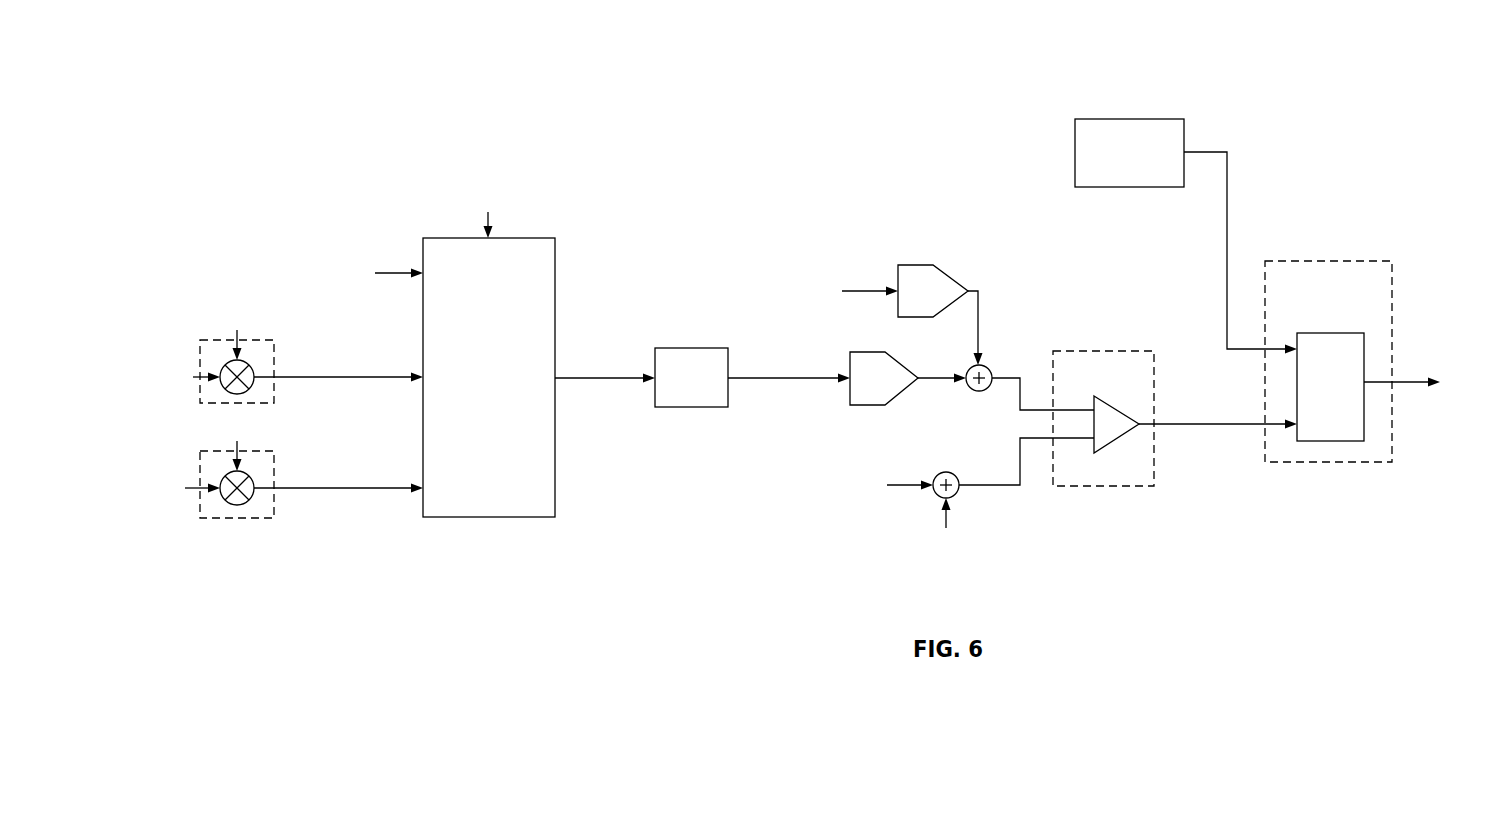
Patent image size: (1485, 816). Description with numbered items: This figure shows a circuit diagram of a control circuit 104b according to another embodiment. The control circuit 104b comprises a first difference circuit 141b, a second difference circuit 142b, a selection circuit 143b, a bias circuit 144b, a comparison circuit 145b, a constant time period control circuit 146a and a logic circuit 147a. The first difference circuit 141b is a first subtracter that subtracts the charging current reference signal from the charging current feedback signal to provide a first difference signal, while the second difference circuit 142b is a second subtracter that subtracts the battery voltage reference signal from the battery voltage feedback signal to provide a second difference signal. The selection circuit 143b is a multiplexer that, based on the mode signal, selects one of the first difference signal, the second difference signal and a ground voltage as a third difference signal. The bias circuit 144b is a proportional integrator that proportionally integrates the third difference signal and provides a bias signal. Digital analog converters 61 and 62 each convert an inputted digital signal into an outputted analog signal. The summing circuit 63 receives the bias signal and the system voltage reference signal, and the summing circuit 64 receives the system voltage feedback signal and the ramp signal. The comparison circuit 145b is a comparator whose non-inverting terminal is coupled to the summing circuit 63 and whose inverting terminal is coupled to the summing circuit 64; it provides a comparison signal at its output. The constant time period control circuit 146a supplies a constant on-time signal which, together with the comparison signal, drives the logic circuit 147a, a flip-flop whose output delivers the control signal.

The control circuit 104b is at (1321, 82).
The first difference circuit 141b is at (276, 382).
The second difference circuit 142b is at (276, 500).
The selection circuit 143b is at (503, 353).
The bias circuit 144b is at (703, 331).
The digital analog converter 61 is at (912, 372).
The digital analog converter 62 is at (964, 287).
The summing circuit 63 is at (990, 370).
The summing circuit 64 is at (957, 475).
The comparison circuit 145b is at (1175, 418).
The constant time period control circuit 146a is at (1186, 236).
The logic circuit 147a is at (1363, 361).